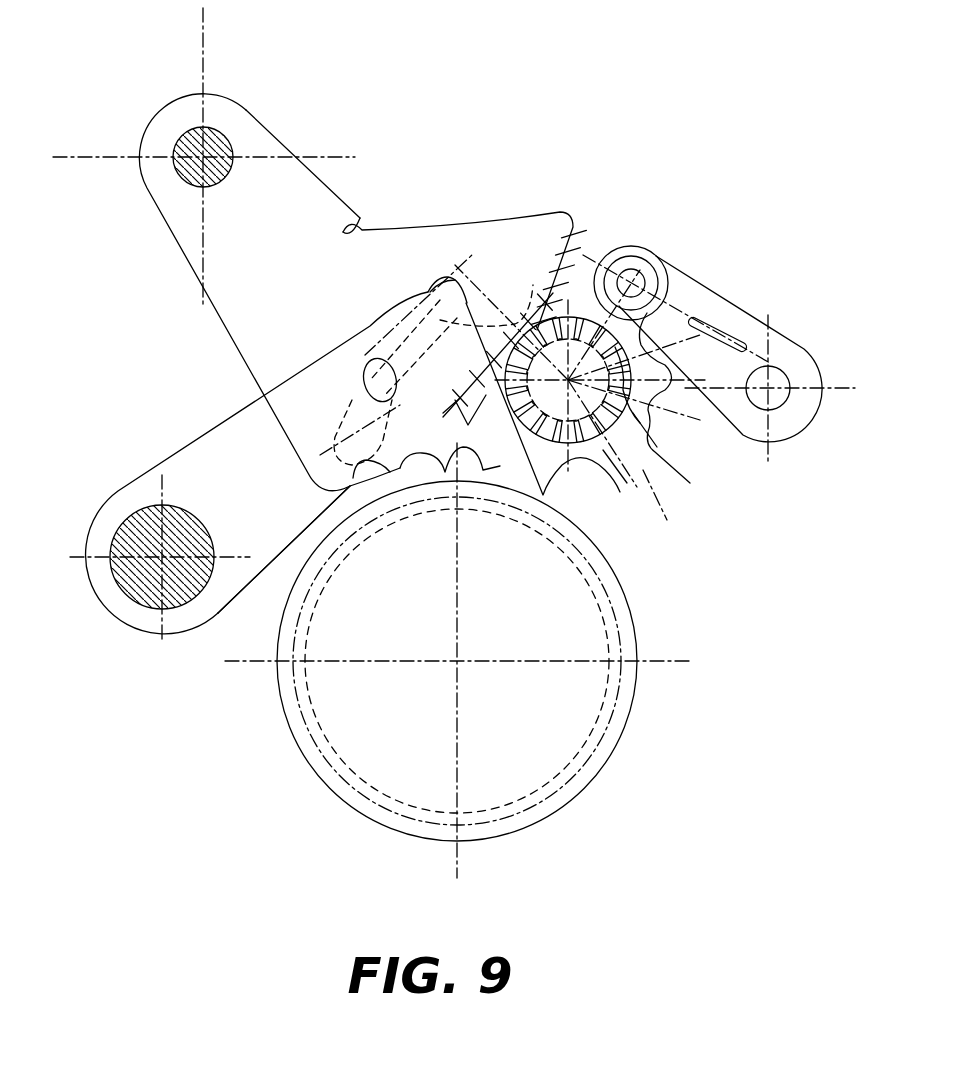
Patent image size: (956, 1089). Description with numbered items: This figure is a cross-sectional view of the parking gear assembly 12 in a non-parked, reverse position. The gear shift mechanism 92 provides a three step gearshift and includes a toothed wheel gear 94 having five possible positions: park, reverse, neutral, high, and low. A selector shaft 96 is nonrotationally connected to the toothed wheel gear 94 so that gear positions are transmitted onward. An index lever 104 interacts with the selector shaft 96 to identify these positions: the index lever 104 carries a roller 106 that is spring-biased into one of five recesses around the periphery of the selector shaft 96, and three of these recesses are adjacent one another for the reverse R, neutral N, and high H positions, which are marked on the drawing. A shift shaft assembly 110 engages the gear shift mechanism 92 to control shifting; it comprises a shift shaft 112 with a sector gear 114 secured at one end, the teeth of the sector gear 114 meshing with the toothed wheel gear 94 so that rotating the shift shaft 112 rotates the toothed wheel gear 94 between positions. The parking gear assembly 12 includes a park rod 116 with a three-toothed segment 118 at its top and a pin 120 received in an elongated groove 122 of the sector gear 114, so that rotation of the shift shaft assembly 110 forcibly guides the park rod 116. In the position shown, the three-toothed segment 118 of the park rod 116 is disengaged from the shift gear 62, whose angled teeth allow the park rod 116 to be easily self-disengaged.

The parking gear assembly 12 is at (116, 470).
The shift gear 62 is at (565, 718).
The gear shift mechanism 92 is at (584, 472).
The toothed wheel gear 94 is at (655, 452).
The selector shaft 96 is at (612, 470).
The index lever 104 is at (700, 297).
The roller 106 is at (632, 247).
The shift shaft assembly 110 is at (290, 152).
The shift shaft 112 is at (217, 138).
The sector gear 114 is at (343, 232).
The park rod 116 is at (208, 607).
The three-toothed segment 118 is at (399, 462).
The pin 120 is at (365, 380).
The elongated groove 122 is at (442, 290).
The reverse position R is at (622, 328).
The neutral position N is at (640, 357).
The high position H is at (637, 413).